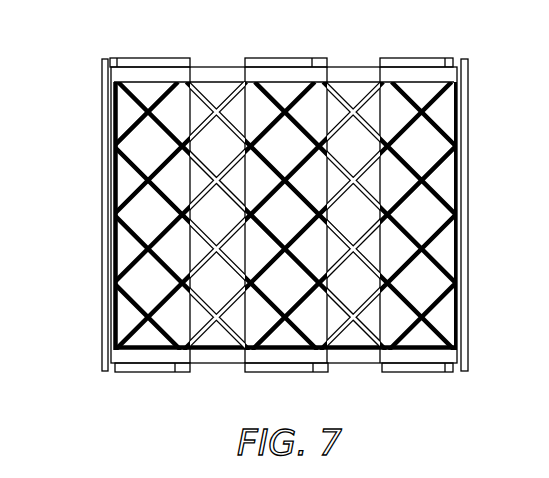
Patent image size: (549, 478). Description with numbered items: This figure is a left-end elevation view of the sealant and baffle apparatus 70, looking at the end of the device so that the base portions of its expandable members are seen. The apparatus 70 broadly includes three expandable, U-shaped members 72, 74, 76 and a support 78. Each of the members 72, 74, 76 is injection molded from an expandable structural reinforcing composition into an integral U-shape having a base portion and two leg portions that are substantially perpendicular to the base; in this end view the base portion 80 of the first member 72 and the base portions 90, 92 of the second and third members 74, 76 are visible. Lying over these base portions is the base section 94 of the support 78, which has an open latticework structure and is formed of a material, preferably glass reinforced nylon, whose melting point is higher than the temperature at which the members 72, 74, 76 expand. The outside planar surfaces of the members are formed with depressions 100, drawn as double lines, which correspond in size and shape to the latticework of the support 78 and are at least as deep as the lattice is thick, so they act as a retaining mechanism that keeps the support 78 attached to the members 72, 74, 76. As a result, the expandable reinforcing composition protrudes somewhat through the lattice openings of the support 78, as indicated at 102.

The sealant and baffle apparatus 70 is at (90, 90).
The expandable U-shaped member 72 is at (442, 387).
The expandable U-shaped member 74 is at (292, 52).
The expandable U-shaped member 76 is at (145, 385).
The support 78 is at (203, 56).
The base portion 80 is at (443, 113).
The base portion 90 is at (254, 118).
The base portion 92 is at (127, 315).
The base section 94 is at (352, 70).
The depressions 100 is at (118, 176).
The protruding reinforcing composition 102 is at (430, 58).